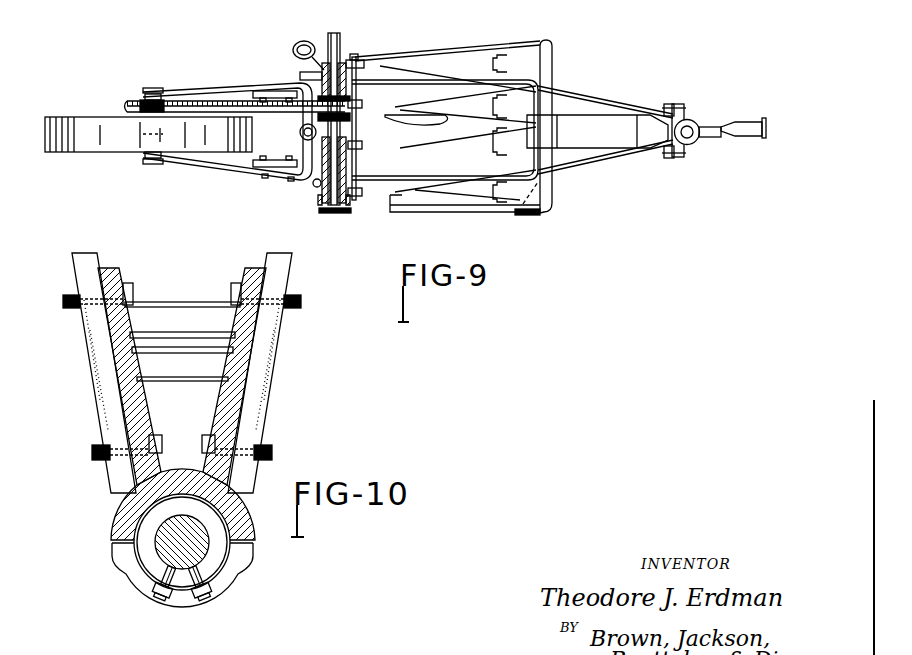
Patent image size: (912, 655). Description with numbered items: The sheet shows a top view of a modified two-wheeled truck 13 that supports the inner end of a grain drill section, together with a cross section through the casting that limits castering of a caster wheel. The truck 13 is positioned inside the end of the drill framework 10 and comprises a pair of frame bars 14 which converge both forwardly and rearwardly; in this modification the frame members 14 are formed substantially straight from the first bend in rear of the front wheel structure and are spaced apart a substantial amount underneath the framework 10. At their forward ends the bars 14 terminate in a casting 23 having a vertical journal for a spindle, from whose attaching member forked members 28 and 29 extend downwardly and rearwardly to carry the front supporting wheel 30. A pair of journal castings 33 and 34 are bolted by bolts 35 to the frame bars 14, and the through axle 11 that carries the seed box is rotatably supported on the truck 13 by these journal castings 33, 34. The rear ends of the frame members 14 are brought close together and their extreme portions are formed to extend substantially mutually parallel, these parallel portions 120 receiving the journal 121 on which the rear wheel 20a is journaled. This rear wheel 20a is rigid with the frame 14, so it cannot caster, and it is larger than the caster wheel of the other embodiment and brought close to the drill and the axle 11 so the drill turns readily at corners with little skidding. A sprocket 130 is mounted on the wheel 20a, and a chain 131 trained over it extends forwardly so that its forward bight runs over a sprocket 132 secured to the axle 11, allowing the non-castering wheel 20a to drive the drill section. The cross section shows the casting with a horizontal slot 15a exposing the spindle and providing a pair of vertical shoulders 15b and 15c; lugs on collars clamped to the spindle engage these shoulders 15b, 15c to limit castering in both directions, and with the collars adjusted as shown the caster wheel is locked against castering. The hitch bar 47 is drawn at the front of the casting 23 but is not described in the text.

In FIG. 9, the framework 10 is at (553, 42).
In FIG. 9, the axle 11 is at (336, 42).
In FIG. 9, the truck 13 is at (599, 176).
In FIG. 9, the frame bars 14 is at (245, 170).
In FIG. 10, the frame bars 14 is at (80, 267).
In FIG. 9, the rear wheel 20a is at (86, 118).
In FIG. 9, the casting 23 is at (694, 120).
In FIG. 10, the casting 23 is at (112, 510).
In FIG. 9, the forked member 28 is at (674, 110).
In FIG. 9, the forked member 29 is at (679, 158).
In FIG. 9, the supporting wheel 30 is at (580, 125).
In FIG. 9, the journal casting 33 is at (349, 63).
In FIG. 9, the journal casting 34 is at (326, 197).
In FIG. 9, the bolts 35 is at (305, 76).
In FIG. 9, the hitch bar 47 is at (747, 135).
In FIG. 9, the parallel portions 120 is at (158, 88).
In FIG. 9, the journal 121 is at (140, 160).
In FIG. 9, the sprocket 130 is at (142, 102).
In FIG. 9, the chain 131 is at (207, 104).
In FIG. 9, the sprocket 132 is at (365, 97).
In FIG. 10, the horizontal slot 15a is at (188, 598).
In FIG. 10, the vertical shoulder 15b is at (112, 538).
In FIG. 10, the vertical shoulder 15c is at (249, 537).